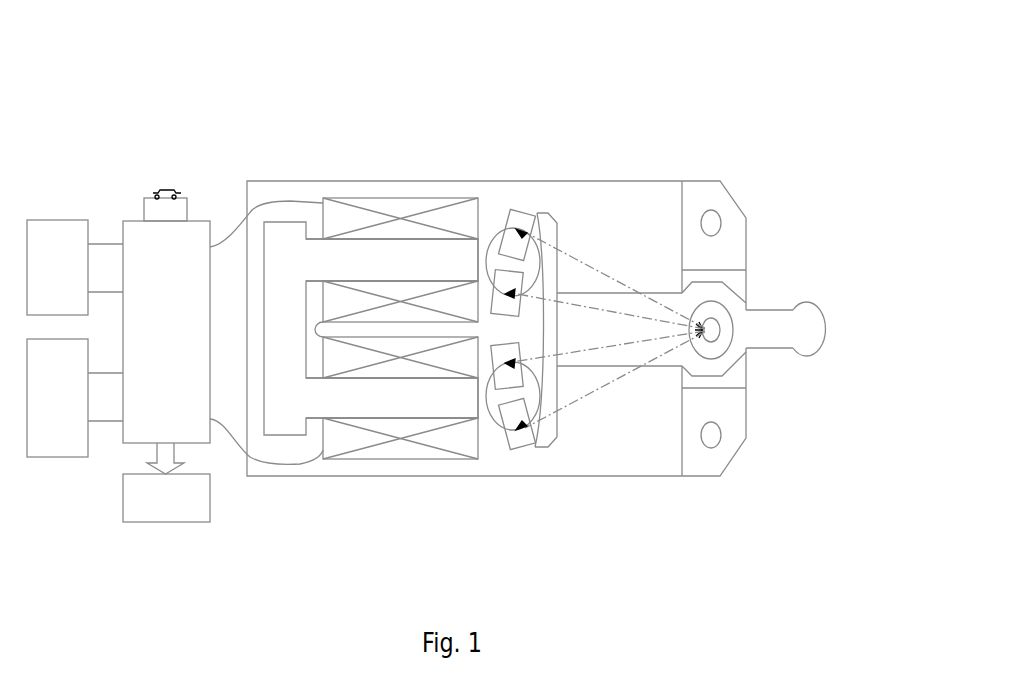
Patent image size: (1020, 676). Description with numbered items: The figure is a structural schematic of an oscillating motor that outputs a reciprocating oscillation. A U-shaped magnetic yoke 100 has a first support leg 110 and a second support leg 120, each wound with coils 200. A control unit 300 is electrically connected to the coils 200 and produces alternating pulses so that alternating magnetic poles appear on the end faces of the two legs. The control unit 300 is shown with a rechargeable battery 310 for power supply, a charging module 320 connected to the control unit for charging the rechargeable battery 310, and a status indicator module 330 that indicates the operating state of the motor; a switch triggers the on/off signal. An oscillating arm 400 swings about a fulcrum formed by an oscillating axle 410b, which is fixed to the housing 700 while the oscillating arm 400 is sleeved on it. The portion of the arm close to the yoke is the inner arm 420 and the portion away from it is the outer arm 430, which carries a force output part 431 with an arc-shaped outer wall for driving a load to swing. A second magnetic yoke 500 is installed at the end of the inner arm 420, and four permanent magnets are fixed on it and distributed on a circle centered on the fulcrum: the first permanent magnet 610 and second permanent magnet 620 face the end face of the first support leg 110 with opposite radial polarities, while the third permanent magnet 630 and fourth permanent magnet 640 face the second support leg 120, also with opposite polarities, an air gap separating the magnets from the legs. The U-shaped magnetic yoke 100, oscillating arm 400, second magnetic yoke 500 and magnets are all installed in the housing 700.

The U-shaped magnetic yoke 100 is at (274, 258).
The first support leg 110 is at (402, 262).
The second support leg 120 is at (387, 399).
The coils 200 is at (342, 213).
The control unit 300 is at (155, 237).
The rechargeable battery 310 is at (57, 267).
The charging module 320 is at (57, 398).
The status indicator module 330 is at (166, 498).
The oscillating arm 400 is at (667, 293).
The oscillating axle 410b is at (712, 338).
The inner arm 420 is at (620, 333).
The outer arm 430 is at (764, 327).
The force output part 431 is at (818, 303).
The second magnetic yoke 500 is at (558, 212).
The first permanent magnet 610 is at (518, 220).
The second permanent magnet 620 is at (503, 283).
The third permanent magnet 630 is at (523, 368).
The fourth permanent magnet 640 is at (523, 437).
The housing 700 is at (713, 255).